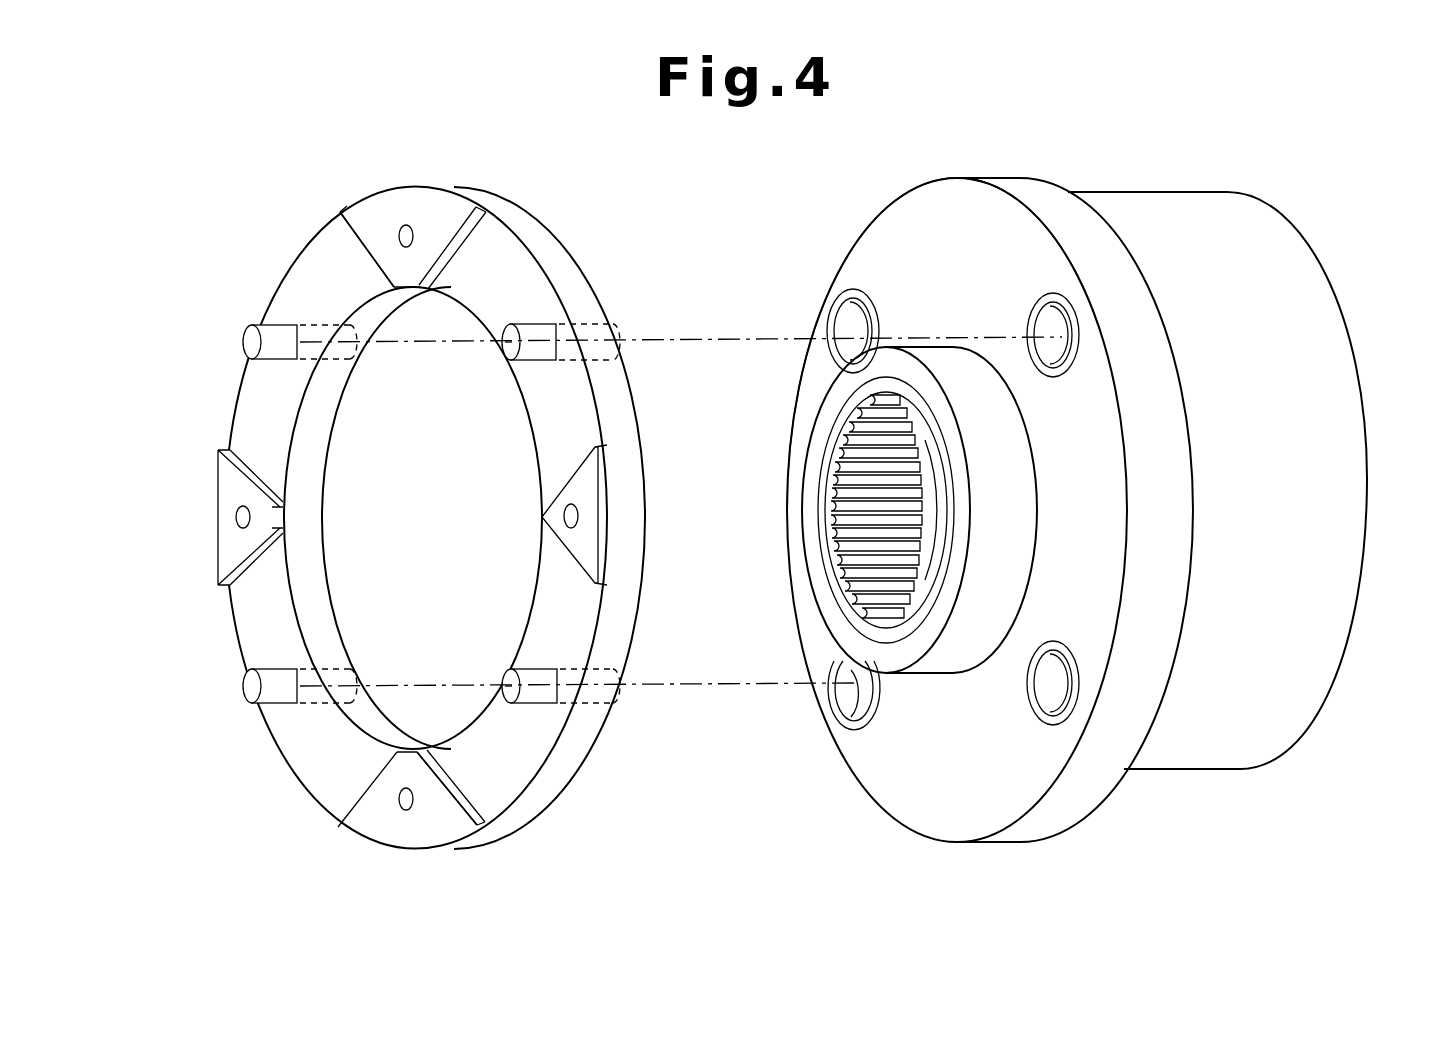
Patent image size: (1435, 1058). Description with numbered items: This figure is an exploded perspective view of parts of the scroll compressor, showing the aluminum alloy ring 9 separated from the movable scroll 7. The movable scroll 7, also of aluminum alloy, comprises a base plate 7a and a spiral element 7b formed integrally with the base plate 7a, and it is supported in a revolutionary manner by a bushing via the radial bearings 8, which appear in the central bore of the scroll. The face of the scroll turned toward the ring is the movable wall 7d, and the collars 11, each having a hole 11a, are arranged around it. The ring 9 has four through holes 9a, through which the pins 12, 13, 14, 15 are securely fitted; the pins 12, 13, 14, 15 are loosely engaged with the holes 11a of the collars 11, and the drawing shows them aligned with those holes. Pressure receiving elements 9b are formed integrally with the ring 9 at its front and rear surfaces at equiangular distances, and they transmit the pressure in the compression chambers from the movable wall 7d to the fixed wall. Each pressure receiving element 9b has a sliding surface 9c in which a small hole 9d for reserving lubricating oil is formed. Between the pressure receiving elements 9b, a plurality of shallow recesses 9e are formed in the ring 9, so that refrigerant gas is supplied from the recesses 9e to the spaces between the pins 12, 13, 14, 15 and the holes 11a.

The movable scroll 7 is at (1182, 192).
The base plate 7a is at (998, 182).
The spiral element 7b is at (1322, 300).
The movable wall 7d is at (878, 232).
The radial bearings 8 is at (826, 559).
The ring 9 is at (541, 201).
The through holes 9a is at (287, 330).
The pressure receiving elements 9b is at (377, 204).
The sliding surface 9c is at (364, 221).
The small hole 9d is at (408, 225).
The shallow recesses 9e is at (492, 258).
The collars 11 is at (873, 298).
The holes 11a is at (847, 318).
The pin 12 is at (243, 342).
The pin 13 is at (507, 350).
The pin 14 is at (246, 693).
The pin 15 is at (532, 672).